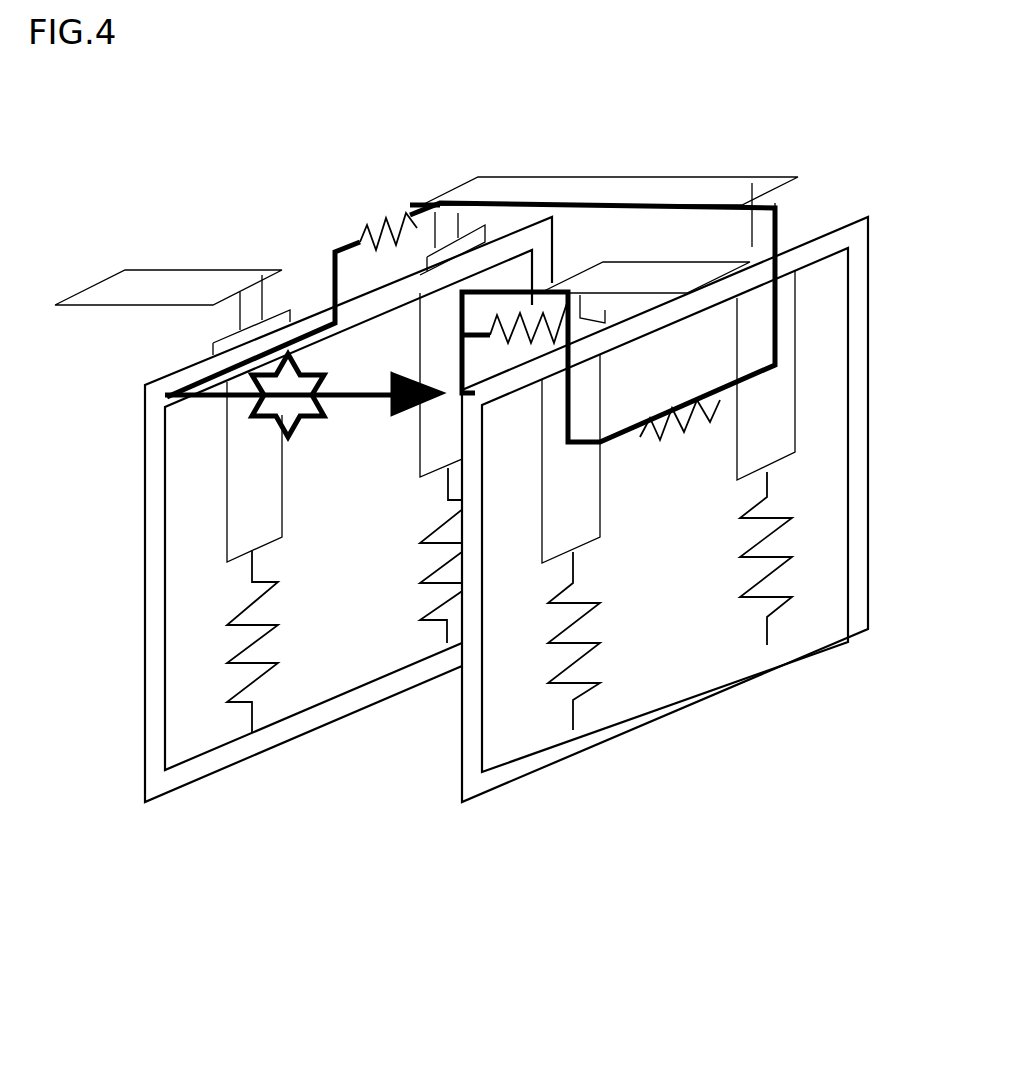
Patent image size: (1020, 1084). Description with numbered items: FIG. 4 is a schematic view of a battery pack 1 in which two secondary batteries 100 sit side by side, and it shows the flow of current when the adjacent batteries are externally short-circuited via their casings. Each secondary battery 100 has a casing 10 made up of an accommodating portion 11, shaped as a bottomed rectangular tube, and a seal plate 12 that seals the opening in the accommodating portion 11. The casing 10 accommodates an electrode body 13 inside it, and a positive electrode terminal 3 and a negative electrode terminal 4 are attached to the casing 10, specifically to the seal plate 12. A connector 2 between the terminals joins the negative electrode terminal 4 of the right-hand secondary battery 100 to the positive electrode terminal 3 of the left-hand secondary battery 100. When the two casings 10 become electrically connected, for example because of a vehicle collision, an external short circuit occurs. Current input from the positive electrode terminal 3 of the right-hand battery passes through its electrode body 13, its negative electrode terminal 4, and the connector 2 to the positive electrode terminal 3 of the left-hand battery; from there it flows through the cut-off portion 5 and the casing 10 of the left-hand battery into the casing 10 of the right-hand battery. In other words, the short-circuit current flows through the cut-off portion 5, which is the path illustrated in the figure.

The power storage system 1 is at (792, 94).
The secondary battery 100 is at (89, 358).
The casing 10 is at (75, 485).
The accommodating portion 11 is at (145, 690).
The seal plate 12 is at (147, 362).
The electrode body 13 is at (345, 440).
The connector 2 is at (185, 285).
The positive electrode terminal 3 is at (427, 184).
The negative electrode terminal 4 is at (299, 278).
The cut-off portion 5 is at (372, 235).